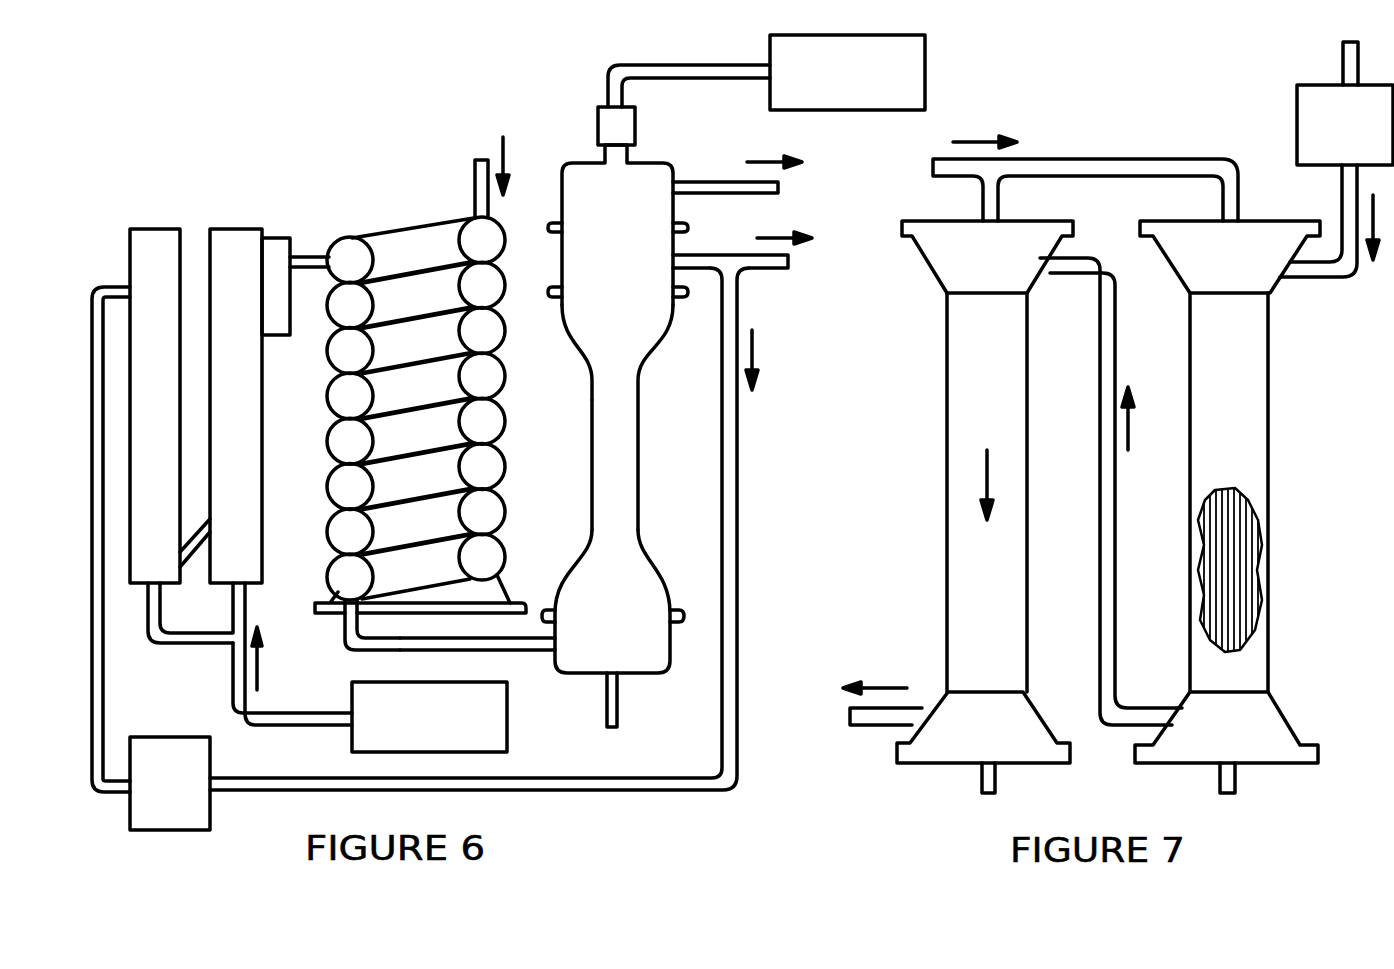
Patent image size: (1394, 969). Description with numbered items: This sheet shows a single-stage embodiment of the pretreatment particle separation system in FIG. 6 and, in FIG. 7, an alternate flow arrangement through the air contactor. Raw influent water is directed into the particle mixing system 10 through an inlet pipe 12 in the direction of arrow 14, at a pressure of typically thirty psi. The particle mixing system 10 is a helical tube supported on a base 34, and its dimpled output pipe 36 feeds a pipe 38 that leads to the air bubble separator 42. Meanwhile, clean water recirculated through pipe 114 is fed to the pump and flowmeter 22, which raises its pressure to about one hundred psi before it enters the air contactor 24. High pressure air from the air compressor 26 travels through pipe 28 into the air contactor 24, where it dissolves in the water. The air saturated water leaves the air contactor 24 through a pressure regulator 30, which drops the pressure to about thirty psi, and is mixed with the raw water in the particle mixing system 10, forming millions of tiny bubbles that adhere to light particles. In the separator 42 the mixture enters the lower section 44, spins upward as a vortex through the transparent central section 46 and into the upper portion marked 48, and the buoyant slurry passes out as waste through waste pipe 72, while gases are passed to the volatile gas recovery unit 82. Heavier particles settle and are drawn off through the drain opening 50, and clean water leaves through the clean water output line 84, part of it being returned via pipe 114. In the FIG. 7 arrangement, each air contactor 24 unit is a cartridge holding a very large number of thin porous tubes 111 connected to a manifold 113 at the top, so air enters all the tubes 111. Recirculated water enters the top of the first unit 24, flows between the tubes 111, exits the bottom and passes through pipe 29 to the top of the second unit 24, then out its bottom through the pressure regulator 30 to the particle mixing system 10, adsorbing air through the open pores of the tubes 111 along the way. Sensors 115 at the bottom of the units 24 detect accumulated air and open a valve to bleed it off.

In FIG. 6, the particle mixing system 10 is at (420, 222).
In FIG. 6, the inlet pipe 12 is at (475, 175).
In FIG. 6, the arrow 14 is at (508, 152).
In FIG. 6, the pump and flowmeter 22 is at (151, 558).
In FIG. 7, the pump and flowmeter 22 is at (1345, 103).
In FIG. 6, the air contactor 24 is at (152, 229).
In FIG. 7, the air contactor 24 is at (928, 366).
In FIG. 6, the air compressor 26 is at (429, 717).
In FIG. 6, the pipe 28 is at (260, 723).
In FIG. 6, the pipe 29 is at (190, 557).
In FIG. 7, the pipe 29 is at (1112, 597).
In FIG. 6, the pressure regulator 30 is at (291, 240).
In FIG. 6, the base 34 is at (505, 584).
In FIG. 6, the output pipe 36 is at (343, 633).
In FIG. 6, the pipe 38 is at (517, 650).
In FIG. 6, the air bubble separator 42 is at (568, 138).
In FIG. 6, the lower section 44 is at (670, 645).
In FIG. 6, the central section 46 is at (640, 412).
In FIG. 6, the upper taper 48 is at (568, 340).
In FIG. 6, the drain opening 50 is at (612, 688).
In FIG. 6, the waste pipe 72 is at (700, 182).
In FIG. 6, the volatile gas recovery unit 82 is at (847, 72).
In FIG. 6, the clean water output line 84 is at (705, 255).
In FIG. 7, the porous tubes 111 is at (1240, 550).
In FIG. 7, the manifold 113 is at (950, 218).
In FIG. 6, the pipe 114 is at (737, 455).
In FIG. 7, the pipe 114 is at (1347, 195).
In FIG. 7, the sensors 115 is at (983, 775).